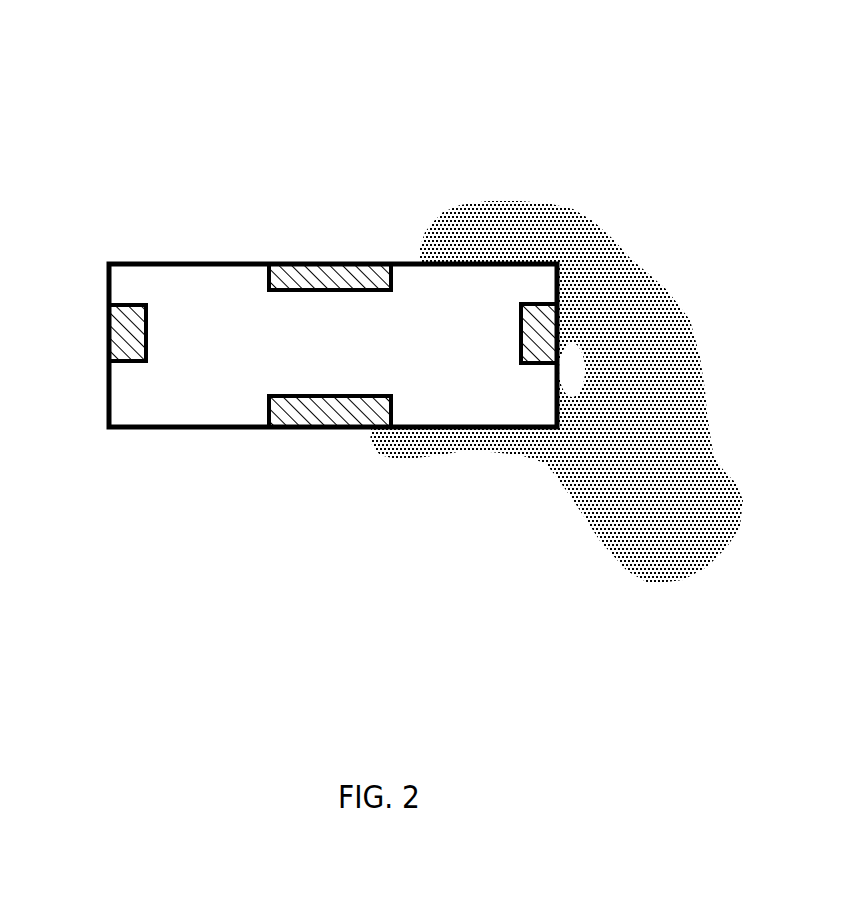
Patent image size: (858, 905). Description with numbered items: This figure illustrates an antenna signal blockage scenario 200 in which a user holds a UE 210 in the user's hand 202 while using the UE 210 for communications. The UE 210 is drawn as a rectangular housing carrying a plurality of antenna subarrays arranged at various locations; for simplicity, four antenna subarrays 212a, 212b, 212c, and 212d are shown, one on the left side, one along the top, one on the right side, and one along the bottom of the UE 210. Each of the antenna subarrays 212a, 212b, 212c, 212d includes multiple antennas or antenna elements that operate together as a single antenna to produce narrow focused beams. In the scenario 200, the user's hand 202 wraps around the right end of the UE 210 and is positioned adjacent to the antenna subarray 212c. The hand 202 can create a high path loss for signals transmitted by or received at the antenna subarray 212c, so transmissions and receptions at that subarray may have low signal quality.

The antenna signal blockage scenario 200 is at (778, 104).
The user's hand 202 is at (702, 325).
The UE 210 is at (165, 261).
The antenna subarray 212a is at (130, 393).
The antenna subarray 212b is at (350, 248).
The antenna subarray 212c is at (560, 318).
The antenna subarray 212d is at (330, 442).